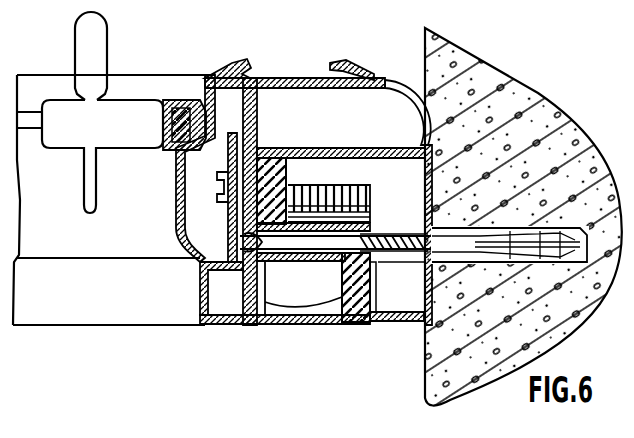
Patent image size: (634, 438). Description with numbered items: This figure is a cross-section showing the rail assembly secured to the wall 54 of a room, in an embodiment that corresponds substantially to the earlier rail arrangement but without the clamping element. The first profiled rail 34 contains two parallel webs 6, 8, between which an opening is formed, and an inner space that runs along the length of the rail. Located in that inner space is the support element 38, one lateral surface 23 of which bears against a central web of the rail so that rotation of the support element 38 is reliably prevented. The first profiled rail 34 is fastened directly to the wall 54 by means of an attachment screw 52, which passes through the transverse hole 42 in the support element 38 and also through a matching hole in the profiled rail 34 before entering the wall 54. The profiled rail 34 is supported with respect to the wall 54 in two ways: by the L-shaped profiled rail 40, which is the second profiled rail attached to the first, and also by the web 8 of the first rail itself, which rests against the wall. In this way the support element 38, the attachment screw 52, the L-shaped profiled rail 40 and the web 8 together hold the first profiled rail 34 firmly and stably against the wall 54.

The first profiled rail 34 is at (383, 78).
The wall 54 is at (525, 100).
The support element 38 is at (278, 172).
The web 6 is at (425, 175).
The transverse hole 42 is at (205, 262).
The attachment screw 52 is at (402, 254).
The lateral surface 23 is at (320, 318).
The web 8 is at (365, 324).
The L-shaped profiled rail 40 is at (404, 323).